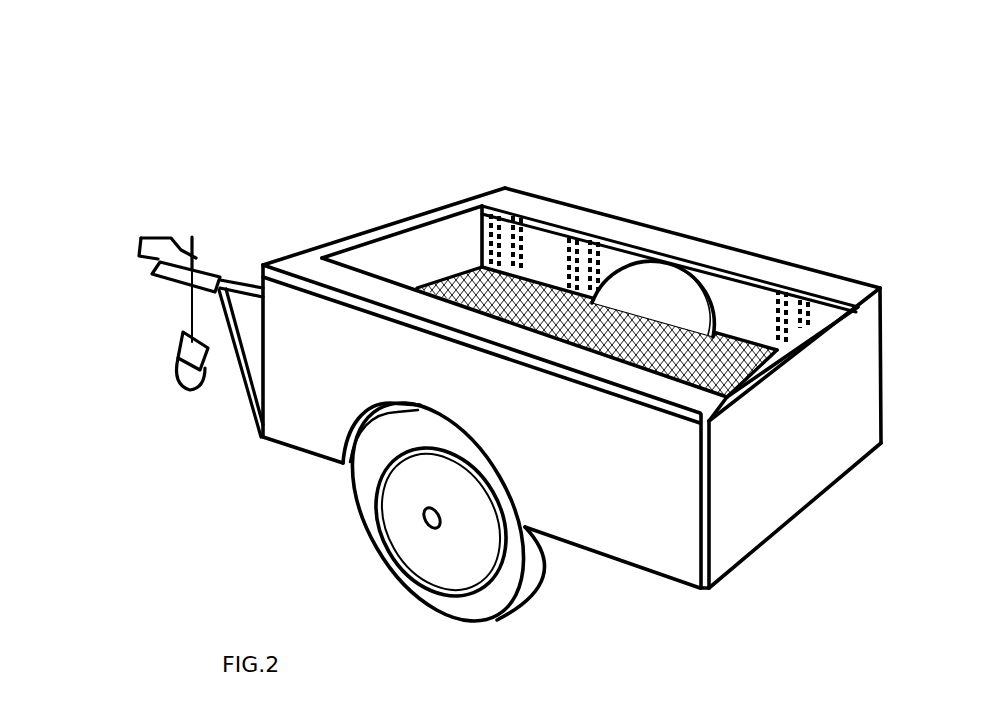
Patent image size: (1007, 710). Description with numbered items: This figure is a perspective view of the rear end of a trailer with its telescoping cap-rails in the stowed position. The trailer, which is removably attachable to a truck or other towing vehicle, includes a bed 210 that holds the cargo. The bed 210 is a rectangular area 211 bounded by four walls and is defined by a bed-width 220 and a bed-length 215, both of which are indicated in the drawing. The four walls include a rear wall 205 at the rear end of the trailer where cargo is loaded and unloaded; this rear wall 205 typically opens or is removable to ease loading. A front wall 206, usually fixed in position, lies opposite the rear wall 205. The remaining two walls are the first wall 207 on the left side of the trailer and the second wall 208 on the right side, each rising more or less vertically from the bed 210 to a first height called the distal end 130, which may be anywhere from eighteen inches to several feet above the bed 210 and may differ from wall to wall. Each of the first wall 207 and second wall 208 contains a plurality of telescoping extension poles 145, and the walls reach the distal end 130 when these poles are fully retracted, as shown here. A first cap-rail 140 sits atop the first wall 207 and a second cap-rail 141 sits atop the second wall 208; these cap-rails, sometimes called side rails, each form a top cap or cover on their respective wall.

The distal end 130 is at (157, 272).
The first cap-rail 140 is at (387, 293).
The second cap-rail 141 is at (637, 235).
The telescoping extension poles 145 is at (567, 250).
The rear wall 205 is at (727, 440).
The front wall 206 is at (440, 277).
The first wall 207 is at (333, 417).
The second wall 208 is at (733, 300).
The bed 210 is at (658, 385).
The rectangular area 211 is at (622, 285).
The bed-length 215 is at (522, 180).
The bed-width 220 is at (470, 190).